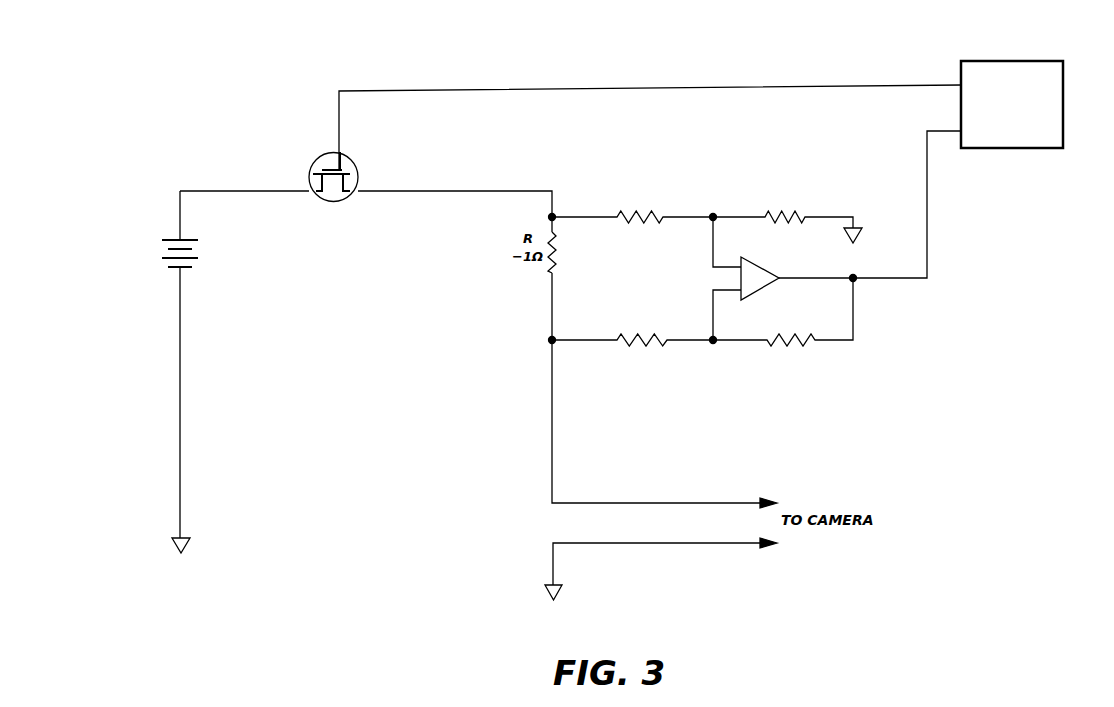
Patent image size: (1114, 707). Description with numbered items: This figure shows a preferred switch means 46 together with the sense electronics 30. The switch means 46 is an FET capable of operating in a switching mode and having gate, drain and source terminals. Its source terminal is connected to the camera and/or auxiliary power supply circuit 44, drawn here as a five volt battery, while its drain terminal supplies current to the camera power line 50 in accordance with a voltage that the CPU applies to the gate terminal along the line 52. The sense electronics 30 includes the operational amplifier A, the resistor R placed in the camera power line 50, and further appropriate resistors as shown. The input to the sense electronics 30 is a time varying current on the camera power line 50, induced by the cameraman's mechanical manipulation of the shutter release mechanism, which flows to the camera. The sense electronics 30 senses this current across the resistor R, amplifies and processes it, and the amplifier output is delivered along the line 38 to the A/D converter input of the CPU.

The sense electronics 30 is at (682, 215).
The line 38 is at (922, 200).
The camera and/or auxiliary power supply circuit 44 is at (157, 248).
The switch means 46 is at (330, 207).
The camera power line 50 is at (422, 188).
The line 52 is at (650, 88).